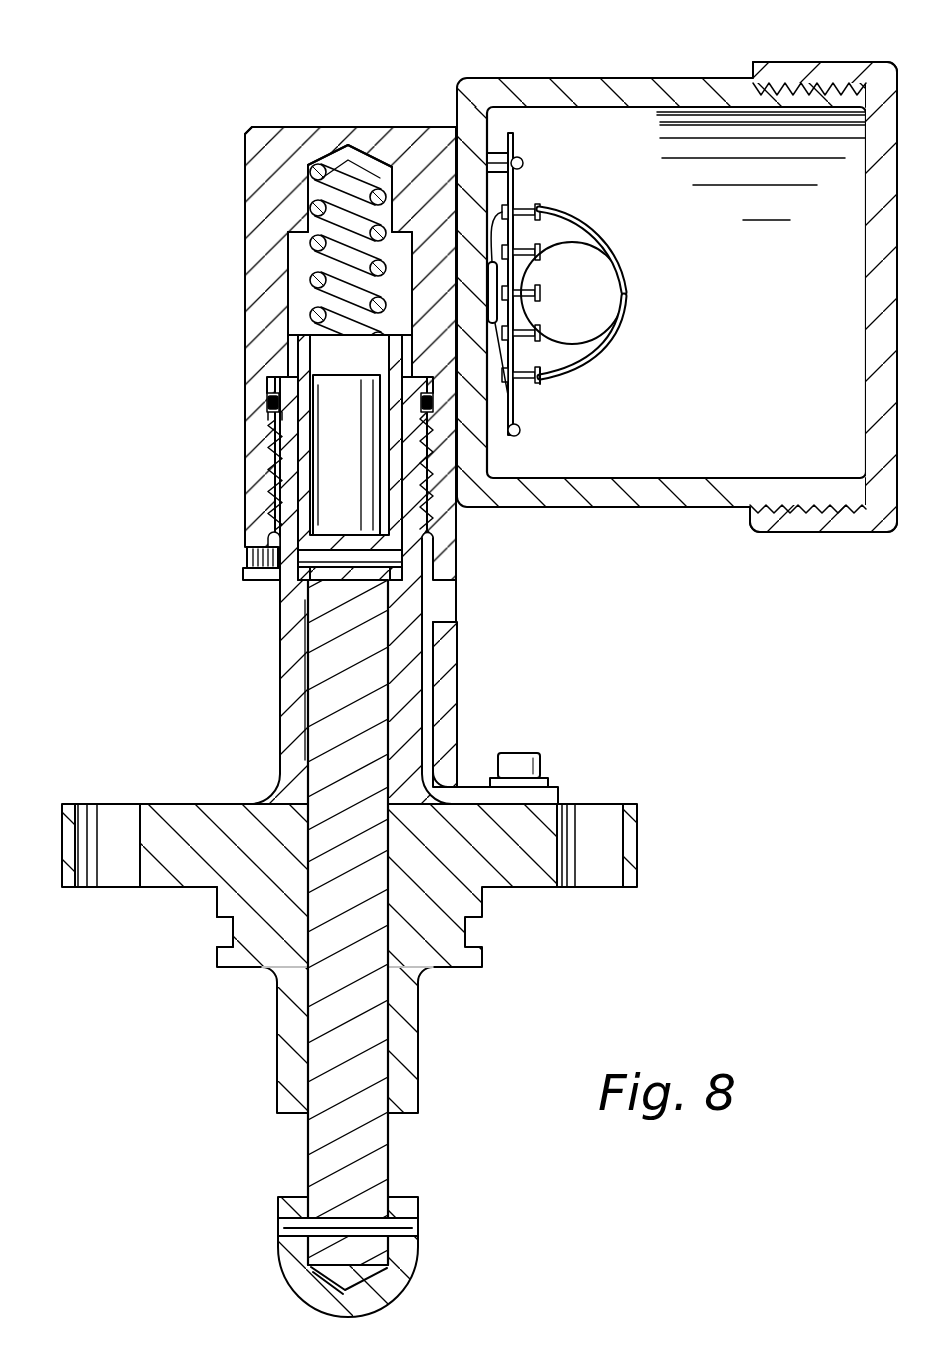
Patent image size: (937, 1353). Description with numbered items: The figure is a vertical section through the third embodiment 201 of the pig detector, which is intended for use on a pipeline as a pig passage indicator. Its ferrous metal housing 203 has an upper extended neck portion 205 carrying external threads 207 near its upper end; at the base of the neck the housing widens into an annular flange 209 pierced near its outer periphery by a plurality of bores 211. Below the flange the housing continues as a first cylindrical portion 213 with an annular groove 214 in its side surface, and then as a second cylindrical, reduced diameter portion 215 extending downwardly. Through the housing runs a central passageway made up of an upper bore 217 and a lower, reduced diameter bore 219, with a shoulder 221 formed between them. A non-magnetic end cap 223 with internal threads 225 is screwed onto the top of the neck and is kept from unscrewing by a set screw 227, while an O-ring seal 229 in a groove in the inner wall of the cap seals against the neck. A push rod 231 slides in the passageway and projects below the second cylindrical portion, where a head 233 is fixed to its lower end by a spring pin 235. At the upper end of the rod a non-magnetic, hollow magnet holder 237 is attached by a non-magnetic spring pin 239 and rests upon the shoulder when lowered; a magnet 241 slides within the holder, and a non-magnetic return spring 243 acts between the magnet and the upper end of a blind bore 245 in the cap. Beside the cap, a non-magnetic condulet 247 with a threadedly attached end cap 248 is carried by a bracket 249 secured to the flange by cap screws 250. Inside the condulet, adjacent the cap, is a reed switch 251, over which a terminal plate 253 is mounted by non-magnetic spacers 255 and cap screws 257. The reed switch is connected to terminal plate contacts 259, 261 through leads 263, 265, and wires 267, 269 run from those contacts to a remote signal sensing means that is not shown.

The third embodiment of pig detector 201 is at (242, 134).
The housing 203 is at (310, 680).
The neck portion 205 is at (283, 630).
The external threads 207 is at (292, 444).
The annular flange 209 is at (171, 803).
The bores 211 is at (80, 826).
The first cylindrical portion 213 is at (215, 910).
The annular groove 214 is at (228, 936).
The second cylindrical reduced diameter portion 215 is at (277, 1048).
The upper bore 217 is at (300, 420).
The lower reduced diameter bore 219 is at (306, 650).
The shoulder 221 is at (300, 588).
The end cap 223 is at (245, 210).
The internal threads 225 is at (276, 487).
The set screw 227 is at (247, 560).
The O-ring seal 229 is at (268, 403).
The push rod 231 is at (307, 1138).
The head 233 is at (280, 1268).
The spring pin 235 is at (278, 1226).
The magnet holder 237 is at (298, 476).
The non-magnetic spring pin 239 is at (402, 560).
The magnet 241 is at (296, 378).
The return spring 243 is at (308, 242).
The blind bore 245 is at (312, 187).
The condulet 247 is at (641, 79).
The end cap of condulet 248 is at (812, 64).
The bracket 249 is at (446, 662).
The cap screws 250 is at (521, 751).
The reed switch 251 is at (524, 321).
The terminal plate 253 is at (515, 142).
The non-magnetic spacers 255 is at (498, 152).
The cap screws 257 is at (524, 160).
The terminal plate contact 259 is at (540, 210).
The terminal plate contact 261 is at (542, 386).
The lead 263 is at (492, 262).
The lead 265 is at (500, 392).
The wire 267 is at (558, 238).
The wire 269 is at (585, 357).